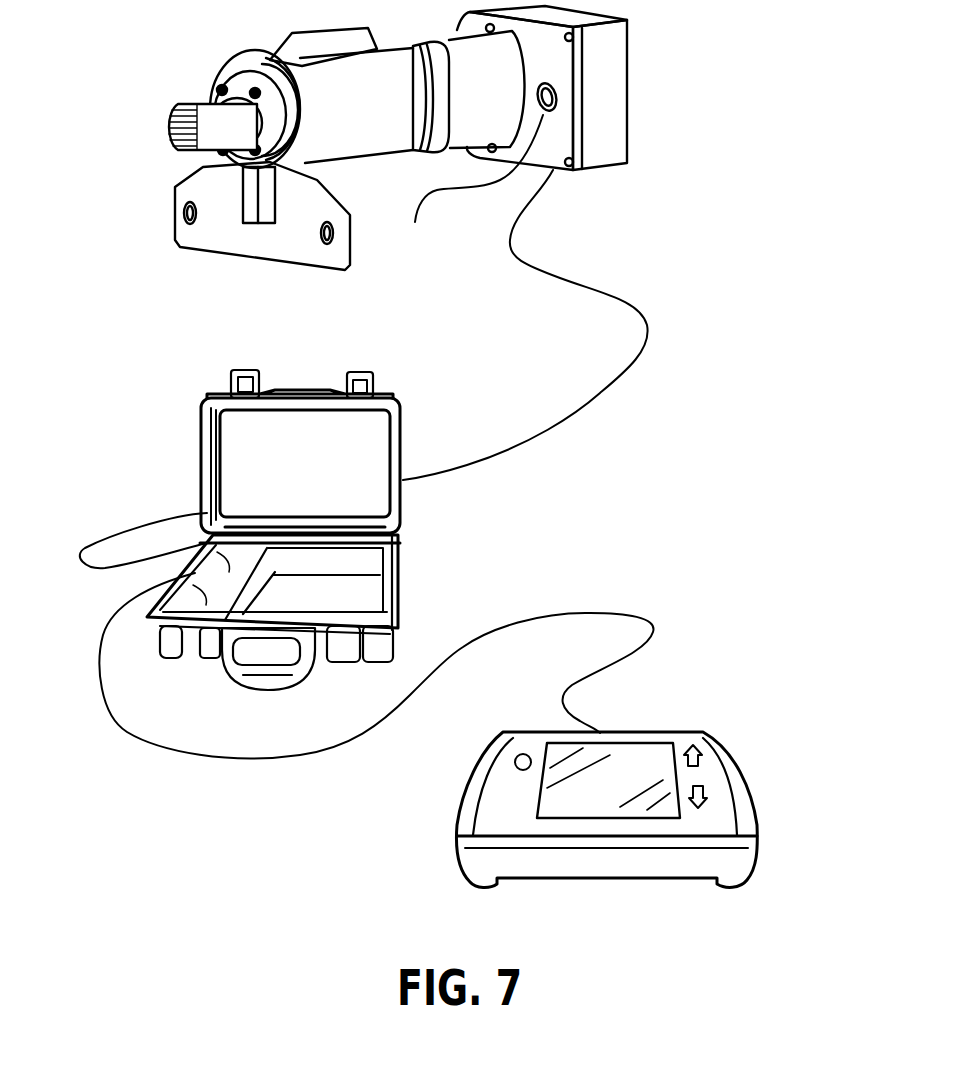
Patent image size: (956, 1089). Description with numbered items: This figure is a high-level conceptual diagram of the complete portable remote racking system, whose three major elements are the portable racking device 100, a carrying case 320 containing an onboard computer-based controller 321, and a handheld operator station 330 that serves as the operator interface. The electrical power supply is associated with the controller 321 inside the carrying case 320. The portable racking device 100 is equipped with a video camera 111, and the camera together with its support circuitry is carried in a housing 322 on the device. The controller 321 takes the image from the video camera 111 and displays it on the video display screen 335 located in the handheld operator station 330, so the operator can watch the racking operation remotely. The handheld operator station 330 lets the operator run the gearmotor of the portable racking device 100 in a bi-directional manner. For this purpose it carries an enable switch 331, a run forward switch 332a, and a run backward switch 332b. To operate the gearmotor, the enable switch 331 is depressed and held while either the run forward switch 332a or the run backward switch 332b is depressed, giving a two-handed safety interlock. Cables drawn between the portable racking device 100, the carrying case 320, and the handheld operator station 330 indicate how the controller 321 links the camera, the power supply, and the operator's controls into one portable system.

The portable racking device 100 is at (660, 106).
The housing 322 is at (610, 137).
The video camera 111 is at (471, 185).
The carrying case 320 is at (438, 574).
The controller 321 is at (190, 607).
The handheld operator station 330 is at (433, 817).
The enable switch 331 is at (522, 753).
The video display screen 335 is at (638, 757).
The run forward switch 332a is at (696, 757).
The run backward switch 332b is at (702, 796).